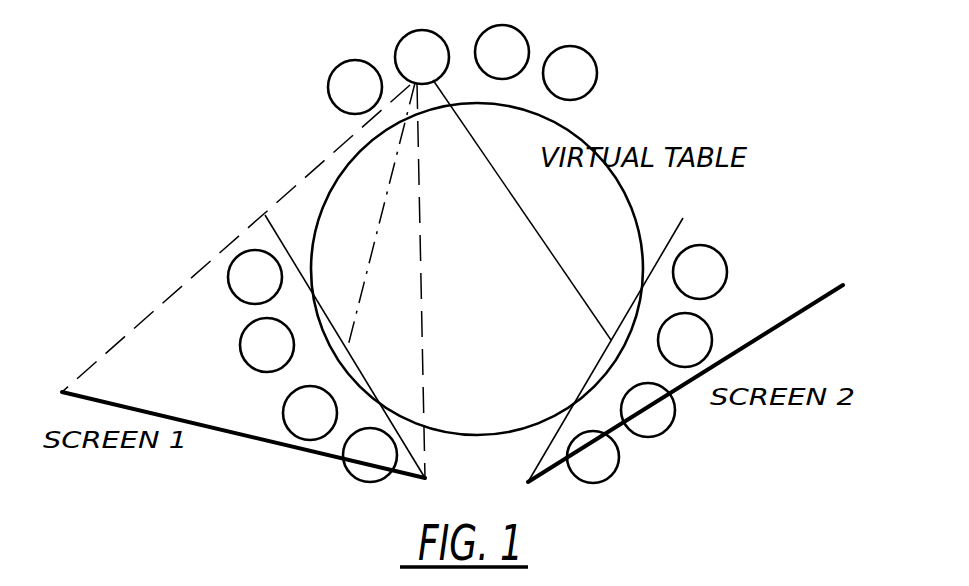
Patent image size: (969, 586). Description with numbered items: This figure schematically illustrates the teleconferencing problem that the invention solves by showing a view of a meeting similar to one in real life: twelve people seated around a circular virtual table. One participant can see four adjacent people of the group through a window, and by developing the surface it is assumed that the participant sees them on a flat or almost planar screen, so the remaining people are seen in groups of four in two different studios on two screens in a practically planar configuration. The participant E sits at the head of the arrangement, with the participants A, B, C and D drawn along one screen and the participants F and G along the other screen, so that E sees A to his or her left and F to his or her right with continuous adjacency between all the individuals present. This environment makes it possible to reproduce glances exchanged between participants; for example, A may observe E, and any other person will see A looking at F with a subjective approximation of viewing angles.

The participant A is at (255, 277).
The participant B is at (267, 345).
The participant C is at (310, 413).
The participant D is at (370, 455).
The participant E is at (422, 57).
The participant F is at (700, 272).
The participant G is at (593, 457).